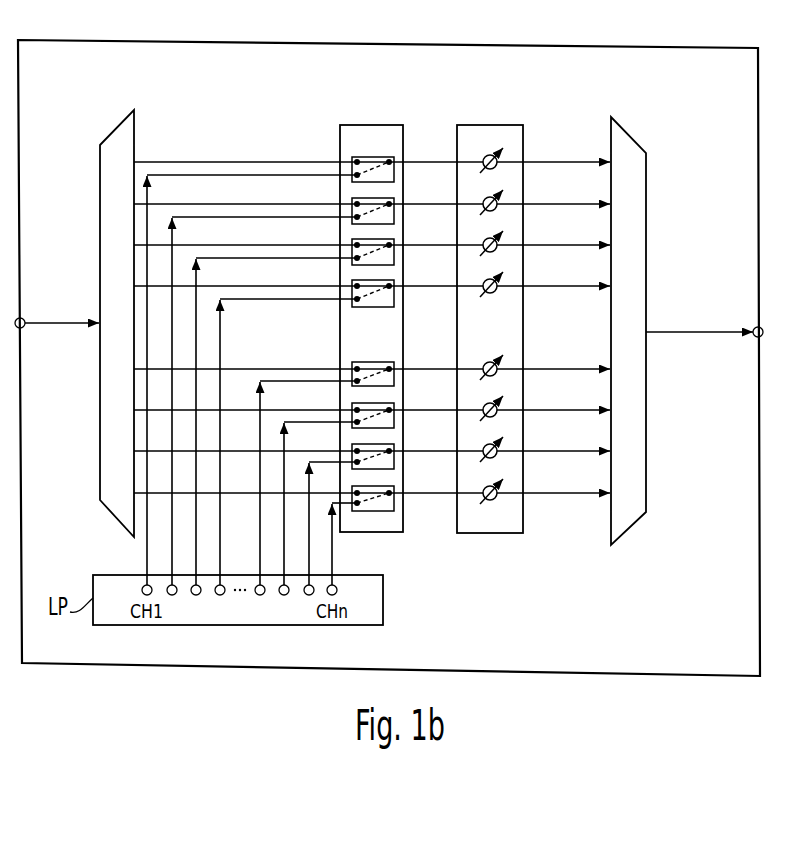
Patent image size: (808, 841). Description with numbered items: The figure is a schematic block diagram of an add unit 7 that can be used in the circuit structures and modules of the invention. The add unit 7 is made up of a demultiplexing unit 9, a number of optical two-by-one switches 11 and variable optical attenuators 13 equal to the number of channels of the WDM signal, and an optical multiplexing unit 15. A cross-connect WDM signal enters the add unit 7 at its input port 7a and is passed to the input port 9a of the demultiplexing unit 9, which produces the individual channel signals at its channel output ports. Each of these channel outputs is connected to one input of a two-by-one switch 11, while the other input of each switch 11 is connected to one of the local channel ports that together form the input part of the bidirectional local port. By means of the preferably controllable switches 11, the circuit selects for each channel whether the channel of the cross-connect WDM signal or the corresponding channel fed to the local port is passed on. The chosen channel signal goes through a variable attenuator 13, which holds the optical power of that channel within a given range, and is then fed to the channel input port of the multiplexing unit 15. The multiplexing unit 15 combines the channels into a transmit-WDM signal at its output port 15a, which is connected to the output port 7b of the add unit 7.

The add unit 7 is at (298, 118).
The input port 7a is at (17, 318).
The output port 7b is at (762, 327).
The demultiplexing unit 9 is at (105, 195).
The input port of the demultiplexing unit 9a is at (98, 318).
The optical 2×1 switch 11 is at (372, 152).
The variable optical attenuator 13 is at (485, 152).
The optical multiplexing unit 15 is at (642, 193).
The output port of the multiplexing unit 15a is at (650, 331).